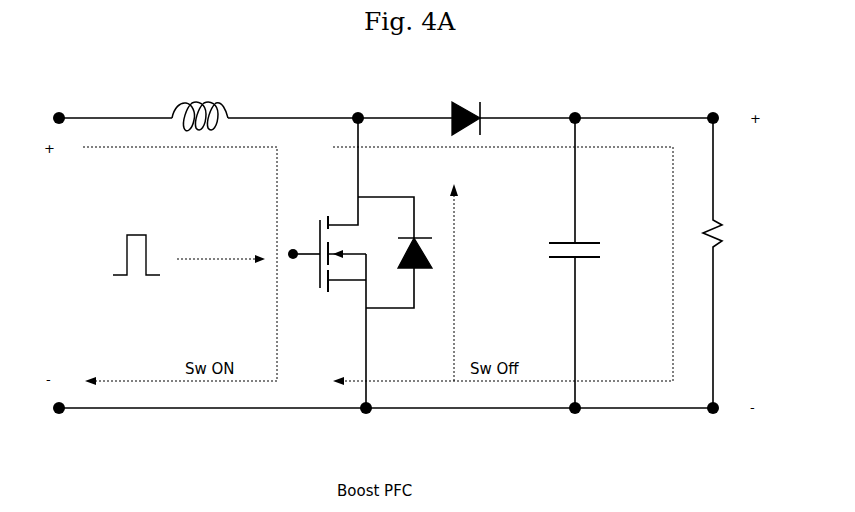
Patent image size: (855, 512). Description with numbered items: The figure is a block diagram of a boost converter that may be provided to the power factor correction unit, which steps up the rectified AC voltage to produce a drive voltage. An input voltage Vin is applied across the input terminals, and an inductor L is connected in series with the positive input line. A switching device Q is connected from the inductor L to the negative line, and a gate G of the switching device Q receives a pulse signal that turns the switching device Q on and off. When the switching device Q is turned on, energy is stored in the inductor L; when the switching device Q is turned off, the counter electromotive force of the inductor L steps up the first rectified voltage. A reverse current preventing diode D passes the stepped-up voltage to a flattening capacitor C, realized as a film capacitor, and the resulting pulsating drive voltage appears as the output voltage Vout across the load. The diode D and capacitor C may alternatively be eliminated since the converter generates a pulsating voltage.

The inductor L is at (200, 103).
The reverse current preventing diode D is at (466, 105).
The switching device Q is at (359, 263).
The gate of transistor Q G is at (303, 274).
The flattening capacitor C is at (581, 263).
The input voltage Vin is at (151, 255).
The output voltage / load Vout is at (734, 263).